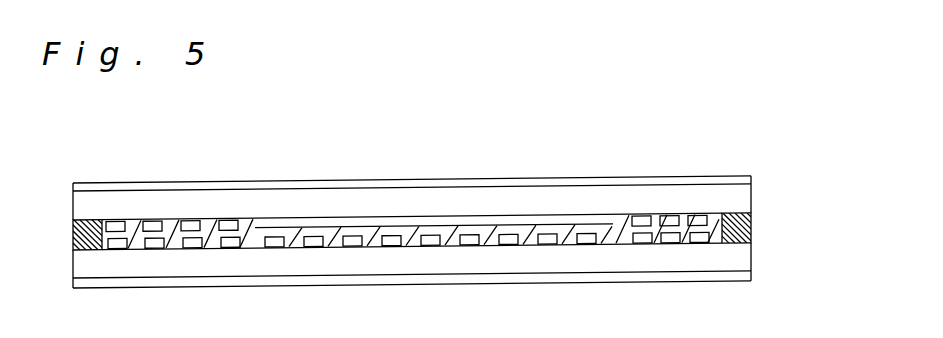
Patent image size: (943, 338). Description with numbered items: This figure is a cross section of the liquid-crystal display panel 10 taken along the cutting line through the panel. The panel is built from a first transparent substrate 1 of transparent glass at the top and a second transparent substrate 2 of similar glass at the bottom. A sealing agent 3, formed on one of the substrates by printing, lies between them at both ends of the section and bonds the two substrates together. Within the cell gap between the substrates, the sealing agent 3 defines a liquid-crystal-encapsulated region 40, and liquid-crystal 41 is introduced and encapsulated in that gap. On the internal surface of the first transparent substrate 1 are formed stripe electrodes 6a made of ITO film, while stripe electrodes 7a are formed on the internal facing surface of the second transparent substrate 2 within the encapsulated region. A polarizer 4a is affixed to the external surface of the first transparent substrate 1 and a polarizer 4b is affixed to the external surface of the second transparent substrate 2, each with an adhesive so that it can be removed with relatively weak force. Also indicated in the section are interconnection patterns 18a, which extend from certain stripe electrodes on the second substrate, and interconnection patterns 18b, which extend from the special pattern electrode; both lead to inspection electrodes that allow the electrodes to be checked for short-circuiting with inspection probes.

The first transparent substrate 1 is at (745, 201).
The second transparent substrate 2 is at (745, 261).
The sealing agent 3 is at (101, 220).
The polarizer 4a is at (697, 177).
The polarizer 4b is at (704, 280).
The stripe electrodes 6a is at (393, 225).
The stripe electrodes 7a is at (352, 247).
The liquid-crystal display panel 10 is at (626, 157).
The interconnection patterns 18a is at (150, 255).
The interconnection patterns 18b is at (662, 251).
The liquid-crystal-encapsulated region 40 is at (209, 222).
The liquid-crystal 41 is at (408, 196).